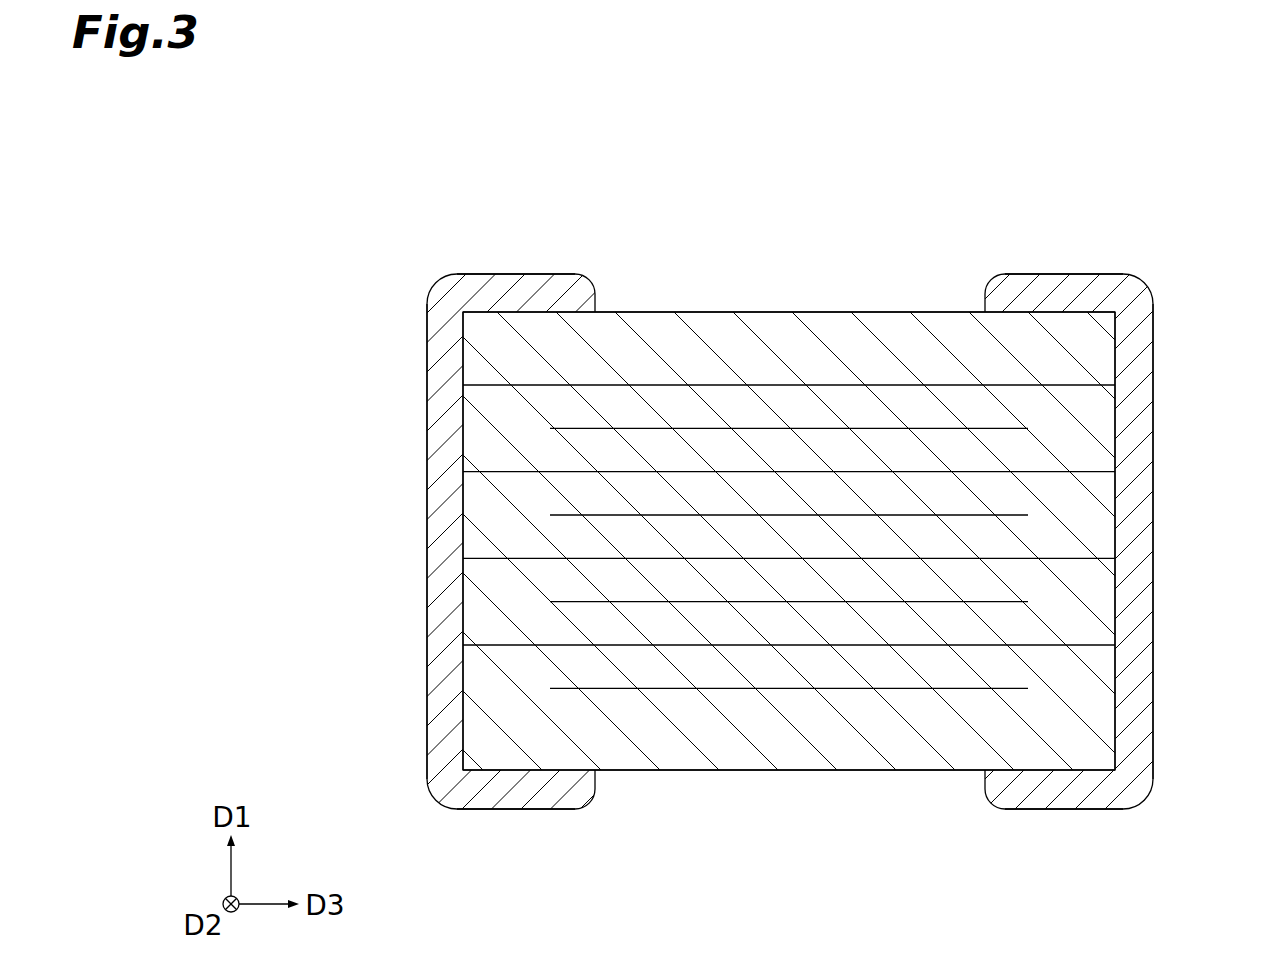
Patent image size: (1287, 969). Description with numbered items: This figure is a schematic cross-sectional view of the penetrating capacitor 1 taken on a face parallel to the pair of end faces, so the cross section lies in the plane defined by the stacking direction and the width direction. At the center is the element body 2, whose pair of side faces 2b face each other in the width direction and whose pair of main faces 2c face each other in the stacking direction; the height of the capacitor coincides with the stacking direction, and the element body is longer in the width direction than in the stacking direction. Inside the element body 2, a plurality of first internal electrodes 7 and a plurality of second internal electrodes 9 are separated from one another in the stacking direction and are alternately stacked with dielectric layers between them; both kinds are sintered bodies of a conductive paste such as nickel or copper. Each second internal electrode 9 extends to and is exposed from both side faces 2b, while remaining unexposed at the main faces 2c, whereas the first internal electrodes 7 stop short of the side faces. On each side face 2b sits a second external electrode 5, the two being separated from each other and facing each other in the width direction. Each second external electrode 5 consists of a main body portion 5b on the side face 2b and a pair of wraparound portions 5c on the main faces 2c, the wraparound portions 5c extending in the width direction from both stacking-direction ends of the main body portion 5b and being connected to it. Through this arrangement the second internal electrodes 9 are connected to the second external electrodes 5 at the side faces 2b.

The penetrating capacitor 1 is at (953, 167).
The element body 2 is at (846, 312).
The side face 2b is at (463, 520).
The main face 2c is at (694, 312).
The second external electrode 5 is at (1158, 333).
The main body portion 5b is at (427, 443).
The wraparound portion 5c is at (519, 272).
The first internal electrode 7 is at (645, 428).
The second internal electrode 9 is at (950, 385).